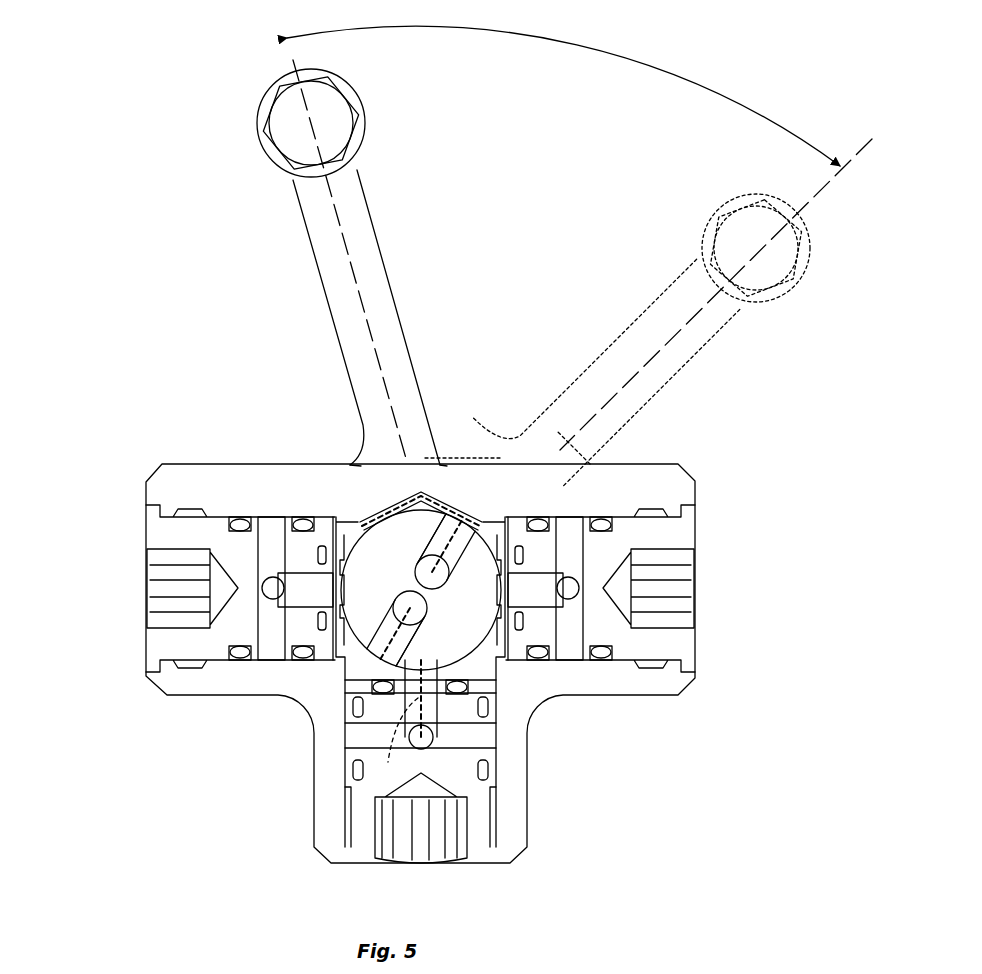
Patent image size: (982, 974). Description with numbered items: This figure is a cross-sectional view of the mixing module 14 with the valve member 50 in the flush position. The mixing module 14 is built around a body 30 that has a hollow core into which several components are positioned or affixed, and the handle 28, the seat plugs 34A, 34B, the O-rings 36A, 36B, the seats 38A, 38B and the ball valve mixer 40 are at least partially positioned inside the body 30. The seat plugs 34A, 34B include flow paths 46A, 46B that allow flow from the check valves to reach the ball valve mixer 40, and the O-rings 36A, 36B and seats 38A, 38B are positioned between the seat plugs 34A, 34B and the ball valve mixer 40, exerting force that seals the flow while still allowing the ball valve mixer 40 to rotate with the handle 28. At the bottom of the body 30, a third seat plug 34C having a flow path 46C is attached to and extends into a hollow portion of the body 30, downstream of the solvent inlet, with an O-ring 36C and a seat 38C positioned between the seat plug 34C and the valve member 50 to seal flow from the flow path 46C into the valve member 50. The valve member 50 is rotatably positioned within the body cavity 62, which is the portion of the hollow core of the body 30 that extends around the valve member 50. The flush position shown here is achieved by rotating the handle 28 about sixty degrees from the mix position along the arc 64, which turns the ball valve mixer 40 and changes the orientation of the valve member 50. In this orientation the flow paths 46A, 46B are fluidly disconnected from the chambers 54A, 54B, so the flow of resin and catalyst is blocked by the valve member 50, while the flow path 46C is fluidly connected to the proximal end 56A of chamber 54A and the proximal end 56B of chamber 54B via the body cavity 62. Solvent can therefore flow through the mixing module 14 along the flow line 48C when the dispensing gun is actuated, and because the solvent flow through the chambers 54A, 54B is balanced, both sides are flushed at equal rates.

The mixing module 14 is at (601, 261).
The handle 28 is at (378, 233).
The body 30 is at (692, 467).
The seat plug 34A is at (142, 529).
The seat plug 34B is at (703, 525).
The seat plug 34C is at (479, 873).
The O-ring 36A is at (313, 552).
The O-ring 36B is at (522, 545).
The O-ring 36C is at (493, 715).
The seat 38A is at (343, 533).
The seat 38B is at (493, 520).
The seat 38C is at (497, 672).
The ball valve mixer 40 is at (376, 509).
The flow path 46A is at (273, 537).
The flow path 46B is at (572, 545).
The flow path 46C is at (480, 713).
The flow line 48C is at (395, 490).
The valve member 50 is at (460, 514).
The chamber 54A is at (365, 626).
The chamber 54B is at (474, 554).
The proximal end 56A is at (412, 642).
The proximal end 56B is at (430, 541).
The body cavity 62 is at (435, 512).
The arc 64 is at (603, 48).